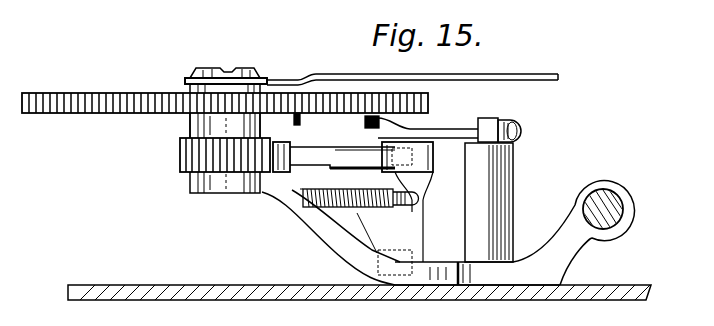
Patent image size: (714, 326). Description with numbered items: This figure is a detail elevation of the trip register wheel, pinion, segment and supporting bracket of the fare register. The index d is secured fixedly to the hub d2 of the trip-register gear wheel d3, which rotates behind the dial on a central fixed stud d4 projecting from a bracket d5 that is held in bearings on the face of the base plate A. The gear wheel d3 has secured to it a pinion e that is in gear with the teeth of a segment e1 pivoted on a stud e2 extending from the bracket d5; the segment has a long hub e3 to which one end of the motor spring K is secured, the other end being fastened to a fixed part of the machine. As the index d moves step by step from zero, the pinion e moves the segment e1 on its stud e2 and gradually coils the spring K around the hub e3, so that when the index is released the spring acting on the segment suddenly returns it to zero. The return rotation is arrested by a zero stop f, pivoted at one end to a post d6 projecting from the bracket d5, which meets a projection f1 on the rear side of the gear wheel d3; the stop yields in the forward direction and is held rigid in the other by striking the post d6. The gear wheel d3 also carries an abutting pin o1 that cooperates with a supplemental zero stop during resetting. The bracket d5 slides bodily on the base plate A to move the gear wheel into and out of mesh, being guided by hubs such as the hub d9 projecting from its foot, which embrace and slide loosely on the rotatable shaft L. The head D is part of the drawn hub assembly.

The base plate A is at (136, 286).
The hub / spindle head D is at (214, 122).
The index d is at (530, 71).
The hub d2 is at (186, 82).
The trip-register gear wheel d3 is at (84, 90).
The central fixed stud d4 is at (206, 125).
The bracket d5 is at (313, 228).
The post d6 is at (510, 158).
The hub d9 is at (603, 184).
The pinion e is at (180, 152).
The segment e1 is at (303, 158).
The stud e2 is at (418, 158).
The long hub e3 is at (416, 205).
The zero stop f is at (447, 133).
The projection f1 is at (364, 124).
The abutting pin o1 is at (293, 117).
The motor spring K is at (343, 212).
The rotatable shaft L is at (620, 196).